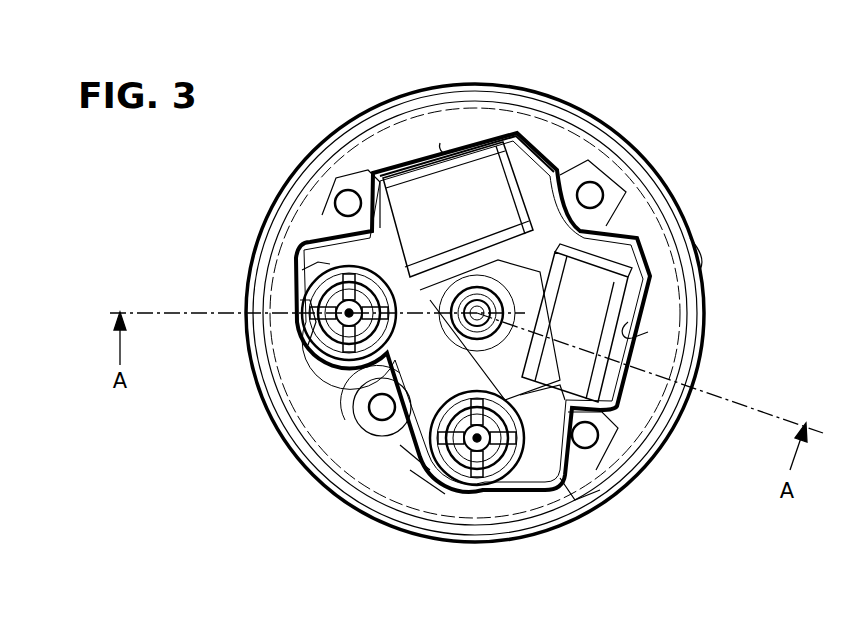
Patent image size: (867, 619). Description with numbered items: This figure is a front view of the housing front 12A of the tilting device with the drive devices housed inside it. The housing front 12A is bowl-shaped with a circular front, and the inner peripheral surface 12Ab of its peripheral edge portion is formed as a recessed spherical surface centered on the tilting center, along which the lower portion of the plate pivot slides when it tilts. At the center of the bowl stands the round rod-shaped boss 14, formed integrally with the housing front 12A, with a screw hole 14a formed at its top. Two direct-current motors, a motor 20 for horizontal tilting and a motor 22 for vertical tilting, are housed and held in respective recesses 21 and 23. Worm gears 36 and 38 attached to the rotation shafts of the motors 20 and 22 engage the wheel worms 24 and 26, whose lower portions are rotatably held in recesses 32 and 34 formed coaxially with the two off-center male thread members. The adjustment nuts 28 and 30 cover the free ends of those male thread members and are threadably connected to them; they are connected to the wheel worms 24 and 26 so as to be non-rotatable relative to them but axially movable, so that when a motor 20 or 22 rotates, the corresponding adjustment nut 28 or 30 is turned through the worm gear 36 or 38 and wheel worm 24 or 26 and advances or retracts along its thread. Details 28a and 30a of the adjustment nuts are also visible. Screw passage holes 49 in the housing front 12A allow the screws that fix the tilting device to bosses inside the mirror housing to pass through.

The housing front 12A is at (688, 216).
The inner peripheral surface 12Ab is at (700, 256).
The boss 14 is at (503, 331).
The screw hole 14a is at (548, 385).
The motor 20 is at (597, 317).
The recess 21 is at (650, 333).
The motor 22 is at (435, 198).
The recess 23 is at (468, 138).
The wheel worm 24 is at (437, 480).
The wheel worm 26 is at (307, 288).
The adjustment nut 28 is at (476, 447).
The connector flange 28a is at (486, 450).
The adjustment nut 30 is at (274, 348).
The connector key slot 30a is at (305, 340).
The recess 32 is at (426, 465).
The recess 34 is at (318, 332).
The worm gear 36 is at (592, 488).
The worm gear 38 is at (322, 232).
The screw passage hole 49 is at (338, 195).